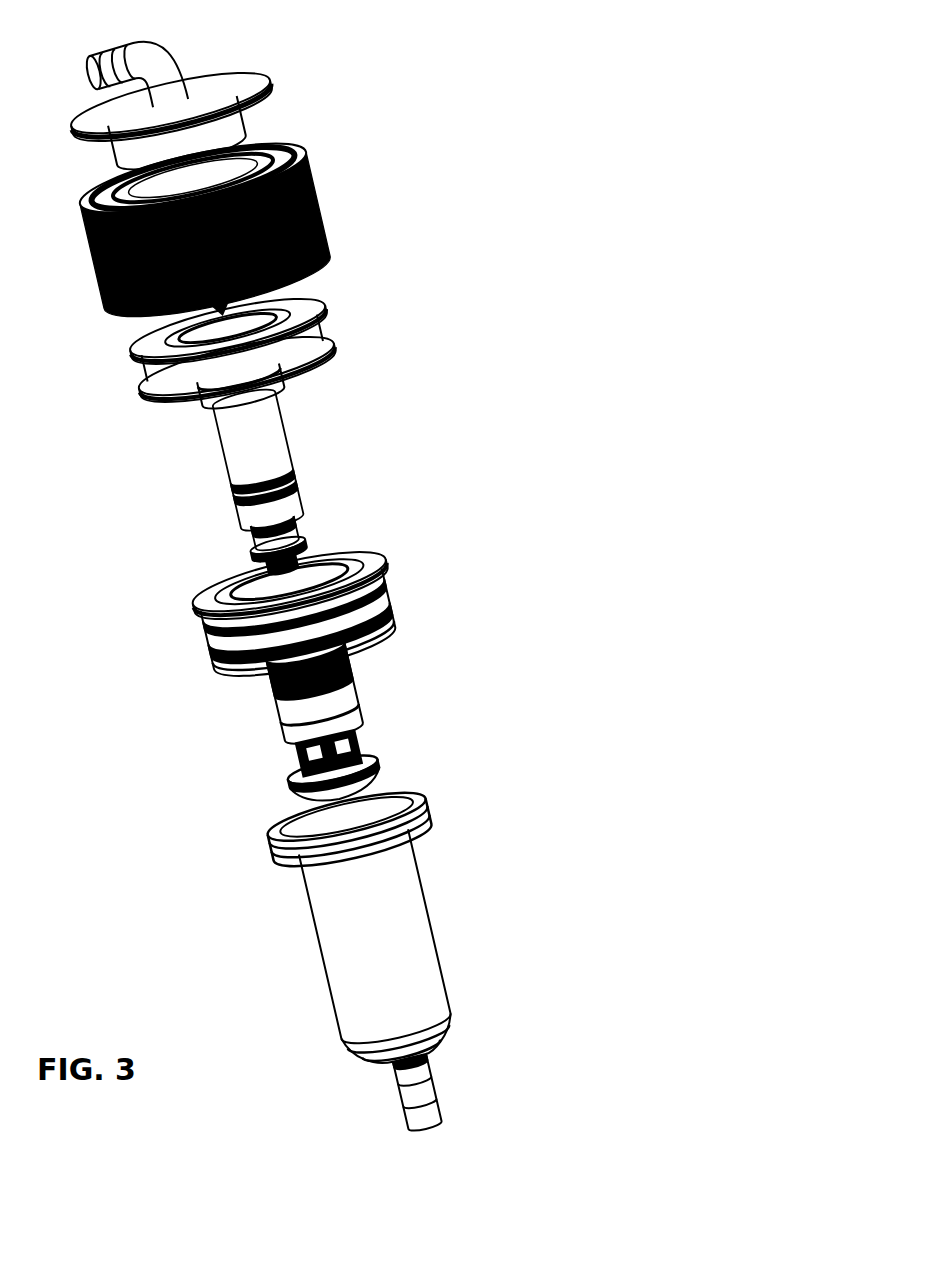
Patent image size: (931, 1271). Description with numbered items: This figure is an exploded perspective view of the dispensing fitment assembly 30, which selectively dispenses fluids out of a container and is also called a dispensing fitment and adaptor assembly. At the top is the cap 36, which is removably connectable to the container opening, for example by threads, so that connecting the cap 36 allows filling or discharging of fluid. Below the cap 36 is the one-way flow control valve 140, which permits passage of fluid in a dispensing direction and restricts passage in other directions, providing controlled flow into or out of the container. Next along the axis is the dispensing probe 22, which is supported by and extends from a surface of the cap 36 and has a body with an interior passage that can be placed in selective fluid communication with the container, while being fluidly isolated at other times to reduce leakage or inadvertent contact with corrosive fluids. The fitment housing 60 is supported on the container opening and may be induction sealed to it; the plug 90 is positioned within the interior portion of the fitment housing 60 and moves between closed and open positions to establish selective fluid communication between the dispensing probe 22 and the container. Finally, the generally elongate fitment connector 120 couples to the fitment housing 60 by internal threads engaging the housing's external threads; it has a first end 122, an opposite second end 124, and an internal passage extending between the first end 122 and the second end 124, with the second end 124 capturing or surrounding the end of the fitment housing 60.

The dispensing fitment assembly 30 is at (648, 120).
The cap 36 is at (300, 168).
The flow control valve 140 is at (300, 298).
The dispensing probe 22 is at (268, 443).
The fitment housing 60 is at (385, 595).
The plug 90 is at (367, 760).
The first end 122 is at (436, 793).
The fitment connector 120 is at (413, 950).
The second end 124 is at (463, 1030).